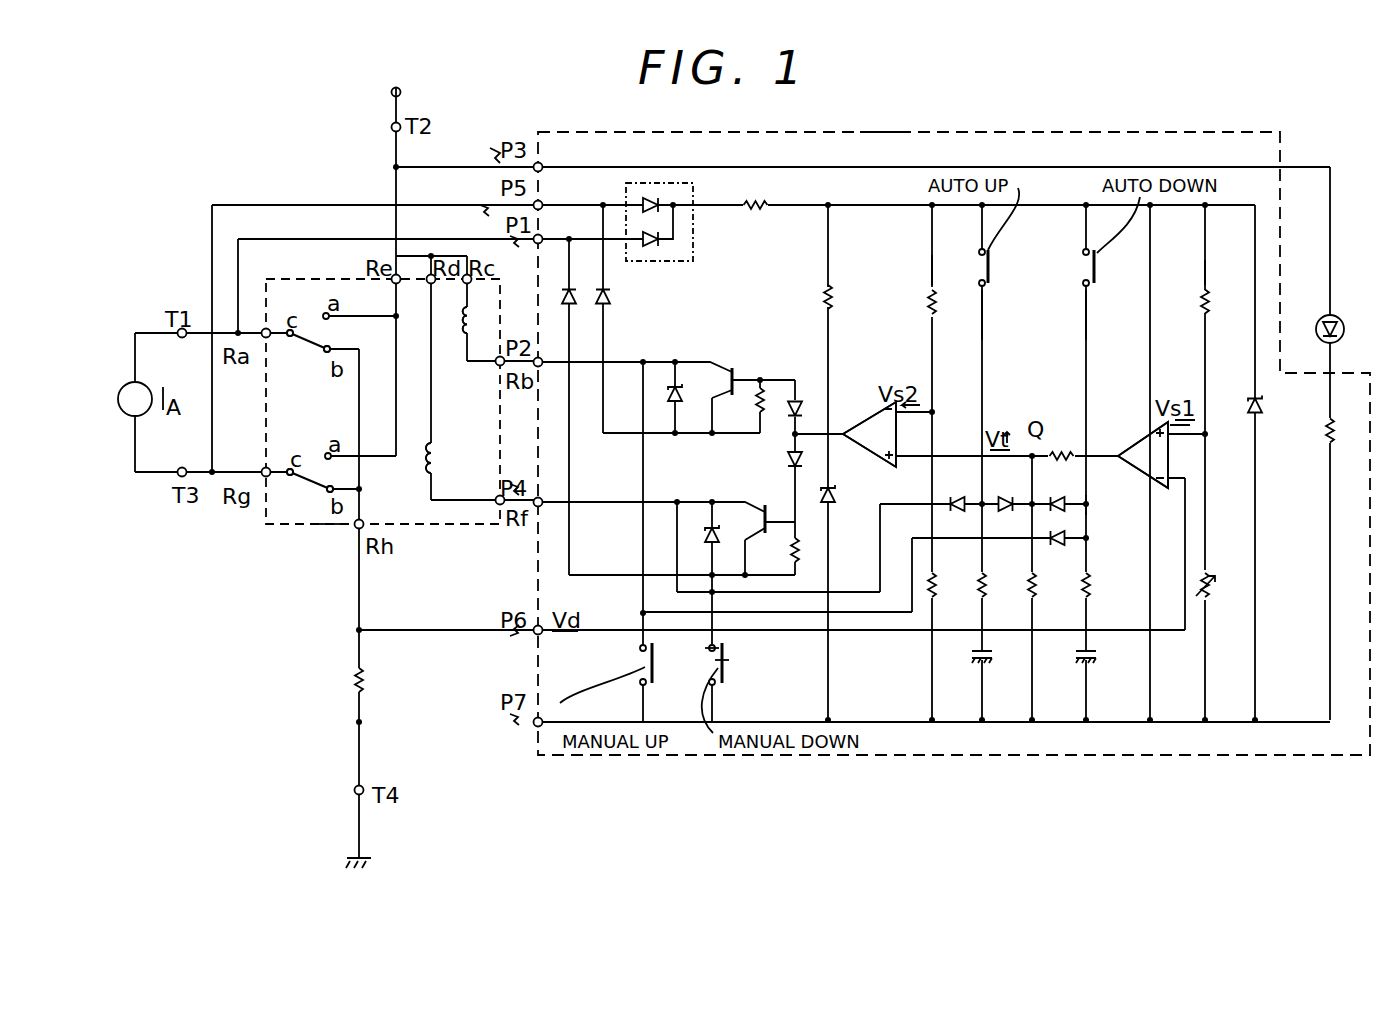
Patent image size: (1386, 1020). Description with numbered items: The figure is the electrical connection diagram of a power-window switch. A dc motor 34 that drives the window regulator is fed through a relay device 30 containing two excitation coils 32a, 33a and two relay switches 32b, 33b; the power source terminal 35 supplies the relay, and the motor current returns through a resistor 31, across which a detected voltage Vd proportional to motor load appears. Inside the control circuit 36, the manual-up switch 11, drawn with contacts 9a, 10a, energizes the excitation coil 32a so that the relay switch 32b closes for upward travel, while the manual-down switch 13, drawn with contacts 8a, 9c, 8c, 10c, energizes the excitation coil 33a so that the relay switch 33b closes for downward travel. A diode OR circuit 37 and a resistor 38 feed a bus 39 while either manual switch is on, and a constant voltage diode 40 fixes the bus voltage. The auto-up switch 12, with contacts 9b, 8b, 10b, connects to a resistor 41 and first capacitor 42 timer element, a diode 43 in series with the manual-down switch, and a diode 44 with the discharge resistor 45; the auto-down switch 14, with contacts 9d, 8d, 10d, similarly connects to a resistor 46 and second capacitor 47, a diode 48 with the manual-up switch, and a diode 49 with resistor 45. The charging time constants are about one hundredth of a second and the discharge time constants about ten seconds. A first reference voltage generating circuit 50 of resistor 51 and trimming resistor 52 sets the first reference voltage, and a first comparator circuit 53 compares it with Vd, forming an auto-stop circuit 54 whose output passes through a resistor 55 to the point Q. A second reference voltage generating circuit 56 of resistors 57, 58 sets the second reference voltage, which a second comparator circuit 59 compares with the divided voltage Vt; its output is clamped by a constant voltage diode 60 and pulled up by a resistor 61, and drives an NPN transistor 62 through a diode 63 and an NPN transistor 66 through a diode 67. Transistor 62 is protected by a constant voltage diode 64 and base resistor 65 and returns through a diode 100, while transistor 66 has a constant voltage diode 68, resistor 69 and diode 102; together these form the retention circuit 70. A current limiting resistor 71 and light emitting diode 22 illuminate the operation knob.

The power source terminal 35 is at (400, 92).
The control circuit 36 is at (878, 130).
The bus 39 is at (880, 205).
The resistor 38 is at (755, 210).
The diode OR circuit 37 is at (693, 245).
The diode 100 is at (606, 296).
The diode 102 is at (572, 303).
The retention circuit 70 is at (675, 352).
The NPN transistor 62 is at (731, 366).
The constant voltage diode 64 is at (680, 391).
The resistor 65 is at (754, 400).
The diode 63 is at (795, 400).
The diode 67 is at (787, 461).
The NPN transistor 66 is at (762, 512).
The constant voltage diode 68 is at (716, 530).
The resistor 69 is at (792, 552).
The second comparator circuit 59 is at (868, 420).
The resistor 61 is at (822, 295).
The constant voltage diode 60 is at (832, 495).
The second reference voltage generating circuit 56 is at (920, 280).
The resistor 57 is at (922, 316).
The resistor 58 is at (955, 570).
The auto-up switch 12 is at (989, 265).
The switch contact 9b is at (978, 252).
The switch contact 8b is at (988, 283).
The switch lead 10b is at (982, 325).
The auto-down switch 14 is at (1095, 256).
The switch contact 9d is at (1083, 252).
The switch contact 8d is at (1094, 285).
The switch lead 10d is at (1083, 286).
The first reference voltage generating circuit 50 is at (1205, 276).
The resistor 51 is at (1222, 307).
The light emitting diode 22 is at (1351, 314).
The constant voltage diode 40 is at (1262, 406).
The current limiting resistor 71 is at (1325, 432).
The auto-stop circuit 54 is at (1128, 440).
The resistor 55 is at (1062, 454).
The diode 43 is at (957, 493).
The diode 44 is at (1004, 493).
The diode 49 is at (1054, 493).
The first comparator circuit 53 is at (1107, 498).
The diode 48 is at (1057, 547).
The resistor 41 is at (978, 585).
The resistor 45 is at (1028, 581).
The resistor 46 is at (1090, 588).
The trimming resistor 52 is at (1211, 594).
The first capacitor 42 is at (972, 658).
The second capacitor 47 is at (1097, 658).
The manual-up switch 11 is at (638, 662).
The manual-down switch 13 is at (715, 663).
The switch contact 9a is at (640, 648).
The switch contact 10a is at (640, 684).
The switch contact 8a is at (660, 663).
The switch contact 9c is at (716, 647).
The switch contact 8c is at (725, 668).
The switch contact 10c is at (714, 684).
The resistor 31 is at (355, 678).
The relay device 30 is at (322, 524).
The dc motor 34 is at (122, 410).
The relay switch 32b is at (312, 352).
The relay switch 33b is at (308, 480).
The excitation coil 32a is at (468, 333).
The excitation coil 33a is at (428, 468).